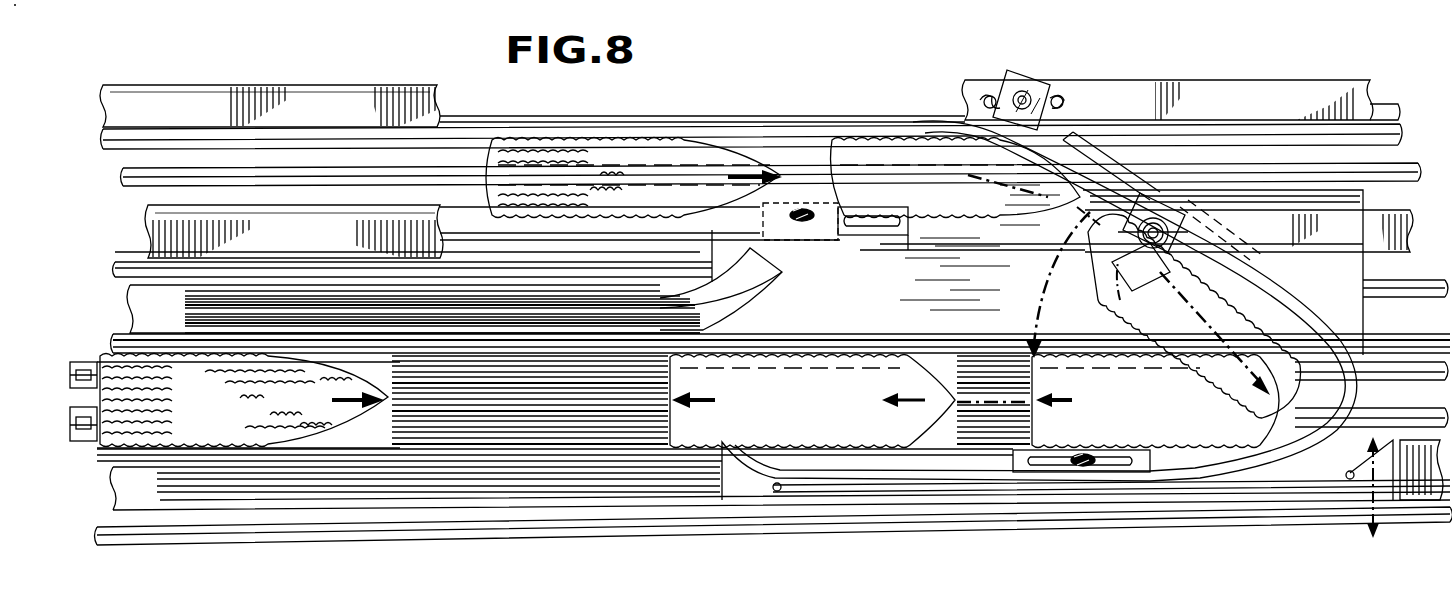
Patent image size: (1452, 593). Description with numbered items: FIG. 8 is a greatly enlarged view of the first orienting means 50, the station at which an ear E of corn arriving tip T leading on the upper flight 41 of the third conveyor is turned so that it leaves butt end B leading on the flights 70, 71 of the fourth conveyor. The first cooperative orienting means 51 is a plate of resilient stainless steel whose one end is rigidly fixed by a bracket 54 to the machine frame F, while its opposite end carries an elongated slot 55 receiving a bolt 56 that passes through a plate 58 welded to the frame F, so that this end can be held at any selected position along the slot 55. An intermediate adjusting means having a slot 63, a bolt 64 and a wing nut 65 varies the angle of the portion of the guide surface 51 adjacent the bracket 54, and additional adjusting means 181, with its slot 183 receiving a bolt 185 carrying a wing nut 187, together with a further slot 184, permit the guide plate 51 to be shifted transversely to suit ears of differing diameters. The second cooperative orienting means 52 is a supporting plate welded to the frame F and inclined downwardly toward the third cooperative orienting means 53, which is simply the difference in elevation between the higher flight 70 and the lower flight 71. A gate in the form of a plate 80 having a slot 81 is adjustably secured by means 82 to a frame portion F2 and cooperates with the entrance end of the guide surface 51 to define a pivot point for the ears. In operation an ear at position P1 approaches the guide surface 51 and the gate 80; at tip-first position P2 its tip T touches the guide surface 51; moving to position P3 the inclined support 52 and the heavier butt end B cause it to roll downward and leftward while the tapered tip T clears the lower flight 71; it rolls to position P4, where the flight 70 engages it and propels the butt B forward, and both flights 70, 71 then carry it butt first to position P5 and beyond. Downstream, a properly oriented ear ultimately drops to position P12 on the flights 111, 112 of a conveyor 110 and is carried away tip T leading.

The upper flight 41 is at (1406, 174).
The first orienting means 50 is at (1420, 232).
The first cooperative orienting means 51 is at (1277, 283).
The second cooperative orienting means 52 is at (802, 326).
The third cooperative orienting means 53 is at (1400, 498).
The bracket 54 is at (1060, 103).
The elongated slot 55 is at (1130, 468).
The bolt 56 is at (1083, 465).
The plate 58 is at (890, 478).
The slot 63 is at (1127, 283).
The bolt 64 is at (1160, 255).
The wing nut 65 is at (1062, 268).
The flight 70 is at (988, 355).
The flight 71 is at (943, 433).
The plate 80 is at (908, 236).
The slot 81 is at (862, 225).
The securing means 82 is at (810, 207).
The conveyor 110 is at (473, 373).
The flight 112 is at (580, 373).
The flight 111 is at (520, 423).
The additional adjusting means 181 is at (1066, 63).
The slot 183 is at (1030, 88).
The slot 184 is at (777, 492).
The bolt 185 is at (1018, 92).
The wing nut 187 is at (990, 96).
The machine frame F is at (311, 100).
The butt end B is at (470, 160).
The ear of corn E is at (642, 136).
The tip end T is at (780, 200).
The position P1 is at (680, 160).
The position P2 is at (885, 140).
The position P3 is at (1194, 316).
The position P4 is at (1158, 415).
The position P5 is at (786, 415).
The position P12 is at (118, 372).
The frame portion F″ F2 is at (773, 217).